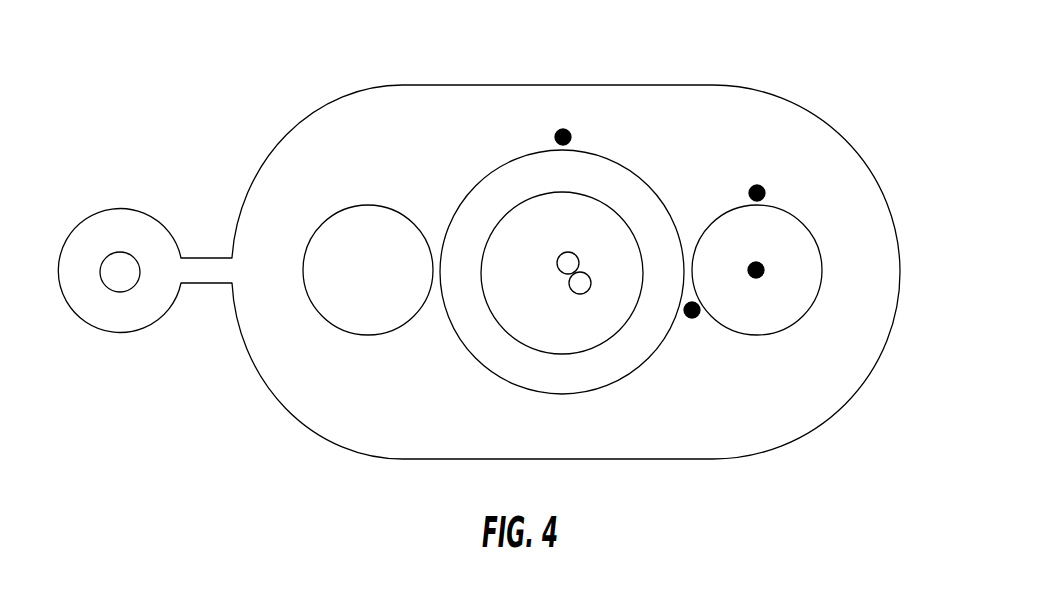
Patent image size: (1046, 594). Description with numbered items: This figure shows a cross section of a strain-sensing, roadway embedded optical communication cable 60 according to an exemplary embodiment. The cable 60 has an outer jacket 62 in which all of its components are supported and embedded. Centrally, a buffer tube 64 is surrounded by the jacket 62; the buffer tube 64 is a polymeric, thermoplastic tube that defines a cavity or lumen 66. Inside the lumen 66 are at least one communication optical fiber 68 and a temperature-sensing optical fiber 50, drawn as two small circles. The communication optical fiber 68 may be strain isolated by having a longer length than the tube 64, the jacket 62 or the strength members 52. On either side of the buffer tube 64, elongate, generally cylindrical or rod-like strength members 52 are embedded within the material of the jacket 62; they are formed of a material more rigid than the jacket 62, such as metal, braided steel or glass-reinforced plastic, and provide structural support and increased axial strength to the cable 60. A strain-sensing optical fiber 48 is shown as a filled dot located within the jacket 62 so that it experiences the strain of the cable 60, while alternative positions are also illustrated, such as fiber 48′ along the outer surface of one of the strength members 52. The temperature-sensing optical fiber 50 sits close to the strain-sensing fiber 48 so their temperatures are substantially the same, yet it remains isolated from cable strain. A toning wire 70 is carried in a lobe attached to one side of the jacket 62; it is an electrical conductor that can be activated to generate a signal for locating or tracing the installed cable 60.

The strain-sensing optical fiber 48 is at (557, 135).
The strain-sensing optical fiber 48′ is at (757, 185).
The temperature-sensing optical fiber 50 is at (593, 288).
The strength members 52 is at (362, 224).
The strain-sensing cable 60 is at (893, 120).
The outer jacket 62 is at (690, 118).
The buffer tube 64 is at (500, 358).
The lumen 66 is at (559, 356).
The communication optical fiber 68 is at (565, 248).
The toning wire 70 is at (118, 273).